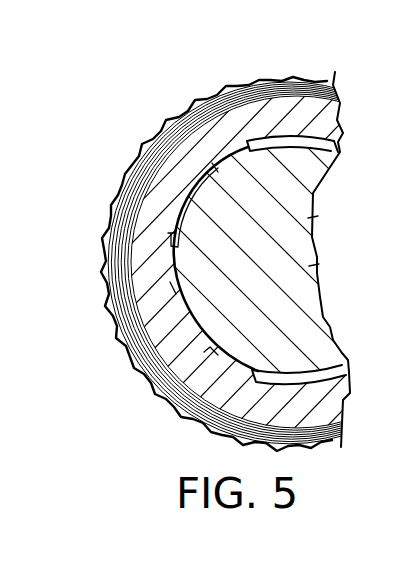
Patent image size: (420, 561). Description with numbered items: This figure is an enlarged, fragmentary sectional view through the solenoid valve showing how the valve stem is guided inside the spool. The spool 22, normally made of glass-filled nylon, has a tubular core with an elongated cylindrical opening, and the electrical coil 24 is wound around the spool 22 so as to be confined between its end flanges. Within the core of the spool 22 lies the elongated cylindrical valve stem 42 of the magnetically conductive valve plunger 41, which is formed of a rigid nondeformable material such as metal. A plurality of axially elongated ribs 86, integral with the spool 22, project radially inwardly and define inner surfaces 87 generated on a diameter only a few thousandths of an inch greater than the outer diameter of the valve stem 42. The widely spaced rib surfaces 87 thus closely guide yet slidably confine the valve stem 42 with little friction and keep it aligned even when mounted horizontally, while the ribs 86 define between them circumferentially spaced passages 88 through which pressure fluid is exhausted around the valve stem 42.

The spool 22 is at (214, 147).
The electrical coil 24 is at (299, 81).
The valve plunger 41 is at (311, 266).
The valve stem 42 is at (308, 220).
The ribs 86 is at (177, 246).
The inner surfaces 87 is at (177, 278).
The passages 88 is at (198, 188).